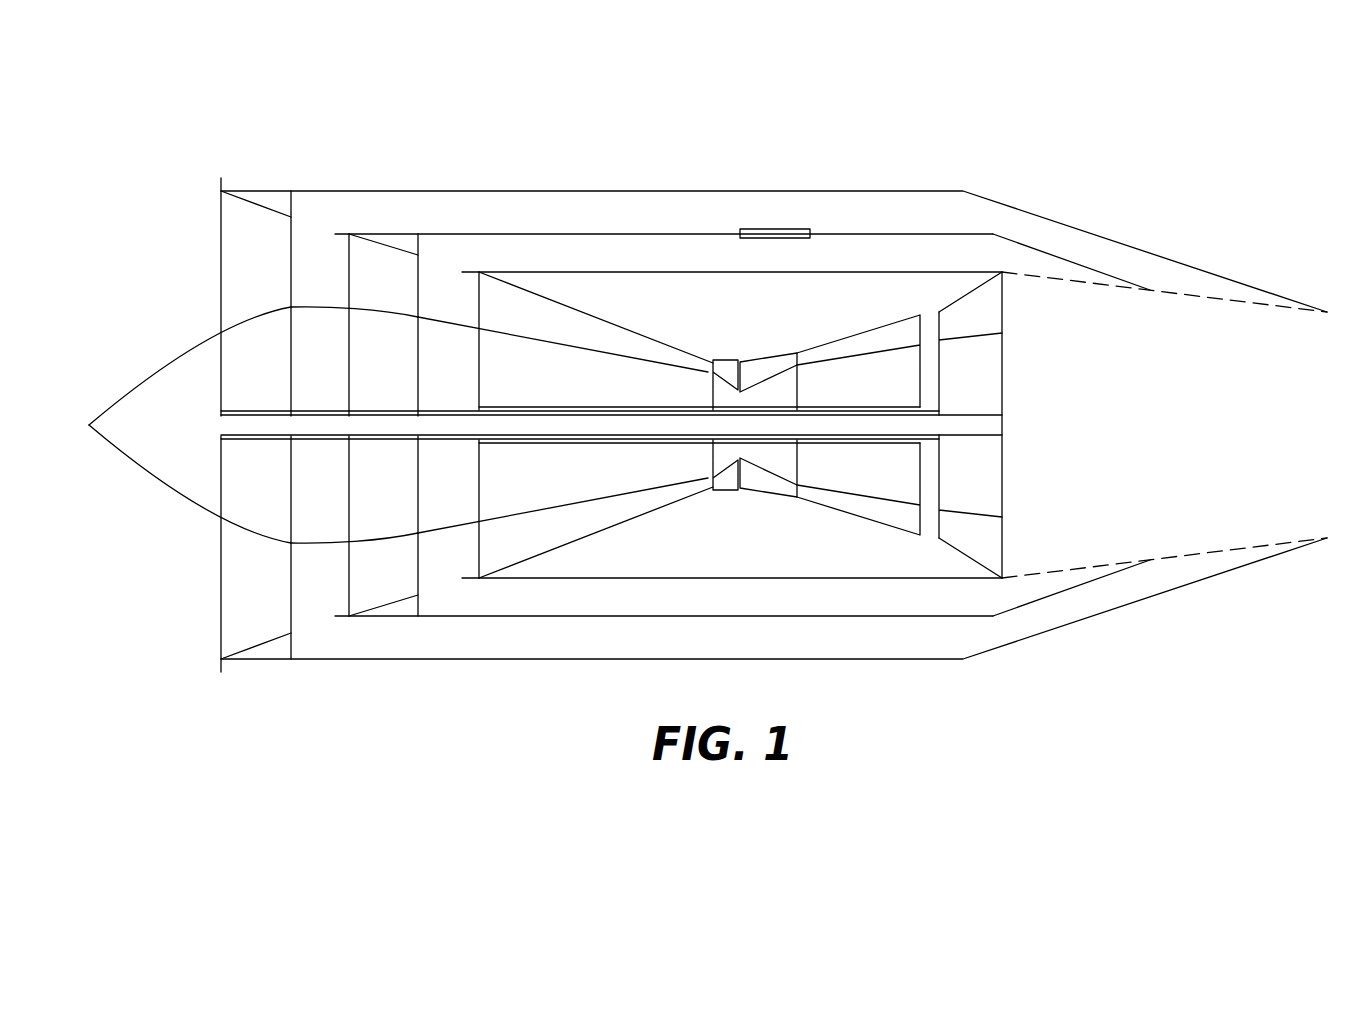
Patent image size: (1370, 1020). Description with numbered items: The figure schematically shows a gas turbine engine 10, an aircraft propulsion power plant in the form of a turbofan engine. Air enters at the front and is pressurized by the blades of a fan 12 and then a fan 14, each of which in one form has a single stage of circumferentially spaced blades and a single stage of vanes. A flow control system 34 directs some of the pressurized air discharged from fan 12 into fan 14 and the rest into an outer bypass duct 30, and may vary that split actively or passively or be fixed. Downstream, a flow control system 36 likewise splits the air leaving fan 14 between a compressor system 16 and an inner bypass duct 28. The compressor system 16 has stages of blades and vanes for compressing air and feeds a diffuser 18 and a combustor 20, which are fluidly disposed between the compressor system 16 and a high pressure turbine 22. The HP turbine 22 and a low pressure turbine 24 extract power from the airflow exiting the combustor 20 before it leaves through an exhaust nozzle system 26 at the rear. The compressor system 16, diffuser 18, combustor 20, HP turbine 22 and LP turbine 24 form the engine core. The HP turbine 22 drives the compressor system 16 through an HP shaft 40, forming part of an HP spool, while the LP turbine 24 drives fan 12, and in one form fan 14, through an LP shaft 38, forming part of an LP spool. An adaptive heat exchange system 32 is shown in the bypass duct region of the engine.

The gas turbine engine 10 is at (208, 127).
The fan 12 is at (221, 248).
The fan 14 is at (347, 262).
The compressor system 16 is at (557, 297).
The diffuser 18 is at (725, 358).
The combustor 20 is at (767, 495).
The high pressure (HP) turbine 22 is at (860, 517).
The low pressure (LP) turbine 24 is at (973, 573).
The exhaust nozzle system 26 is at (1252, 547).
The bypass duct 28 is at (953, 253).
The bypass duct 30 is at (862, 210).
The adaptive heat exchange system 32 is at (773, 228).
The flow control system 34 is at (336, 234).
The flow control system 36 is at (472, 263).
The LP shaft 38 is at (928, 440).
The HP shaft 40 is at (655, 445).